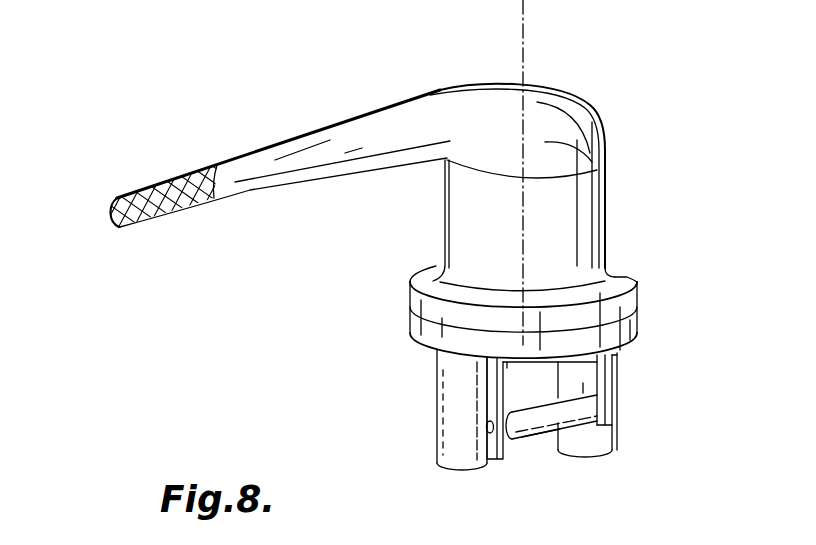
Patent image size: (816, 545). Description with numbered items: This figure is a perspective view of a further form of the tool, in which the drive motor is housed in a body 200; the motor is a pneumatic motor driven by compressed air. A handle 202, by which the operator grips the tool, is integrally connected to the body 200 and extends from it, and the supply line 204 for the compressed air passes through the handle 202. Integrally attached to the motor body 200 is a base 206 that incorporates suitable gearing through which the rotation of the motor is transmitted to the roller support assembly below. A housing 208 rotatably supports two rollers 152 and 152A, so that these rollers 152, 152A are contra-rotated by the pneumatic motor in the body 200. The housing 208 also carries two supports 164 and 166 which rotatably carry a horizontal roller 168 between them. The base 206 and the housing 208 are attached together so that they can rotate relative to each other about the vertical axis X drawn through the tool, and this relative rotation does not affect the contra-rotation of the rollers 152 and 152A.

The body 200 is at (607, 200).
The handle 202 is at (288, 137).
The supply line 204 is at (160, 205).
The base 206 is at (620, 275).
The housing 208 is at (637, 325).
The support 164 is at (600, 373).
The support 166 is at (493, 392).
The horizontal roller 168 is at (527, 440).
The roller 152 is at (592, 440).
The roller 152A is at (455, 445).